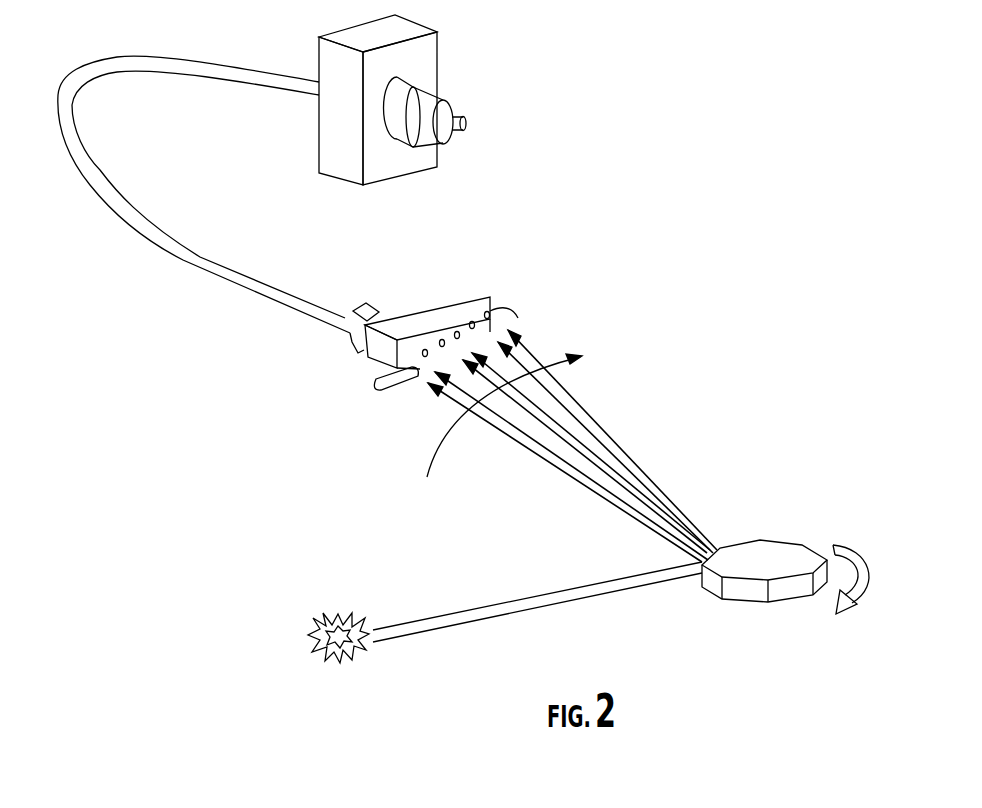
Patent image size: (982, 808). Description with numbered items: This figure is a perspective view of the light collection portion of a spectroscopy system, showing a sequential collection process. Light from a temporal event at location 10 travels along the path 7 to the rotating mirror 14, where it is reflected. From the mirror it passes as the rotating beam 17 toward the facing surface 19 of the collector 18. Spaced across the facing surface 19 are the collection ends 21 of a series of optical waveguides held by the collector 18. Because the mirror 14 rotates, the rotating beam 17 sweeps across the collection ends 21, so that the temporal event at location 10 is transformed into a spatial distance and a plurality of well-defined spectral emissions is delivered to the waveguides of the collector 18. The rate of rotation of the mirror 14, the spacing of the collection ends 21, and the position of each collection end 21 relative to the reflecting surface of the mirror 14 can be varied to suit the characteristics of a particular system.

The path 7 is at (433, 633).
The location 10 is at (310, 633).
The rotating mirror 14 is at (767, 545).
The rotating beam 17 is at (540, 452).
The collector 18 is at (430, 312).
The facing surface 19 is at (420, 369).
The collection ends 21 is at (417, 376).